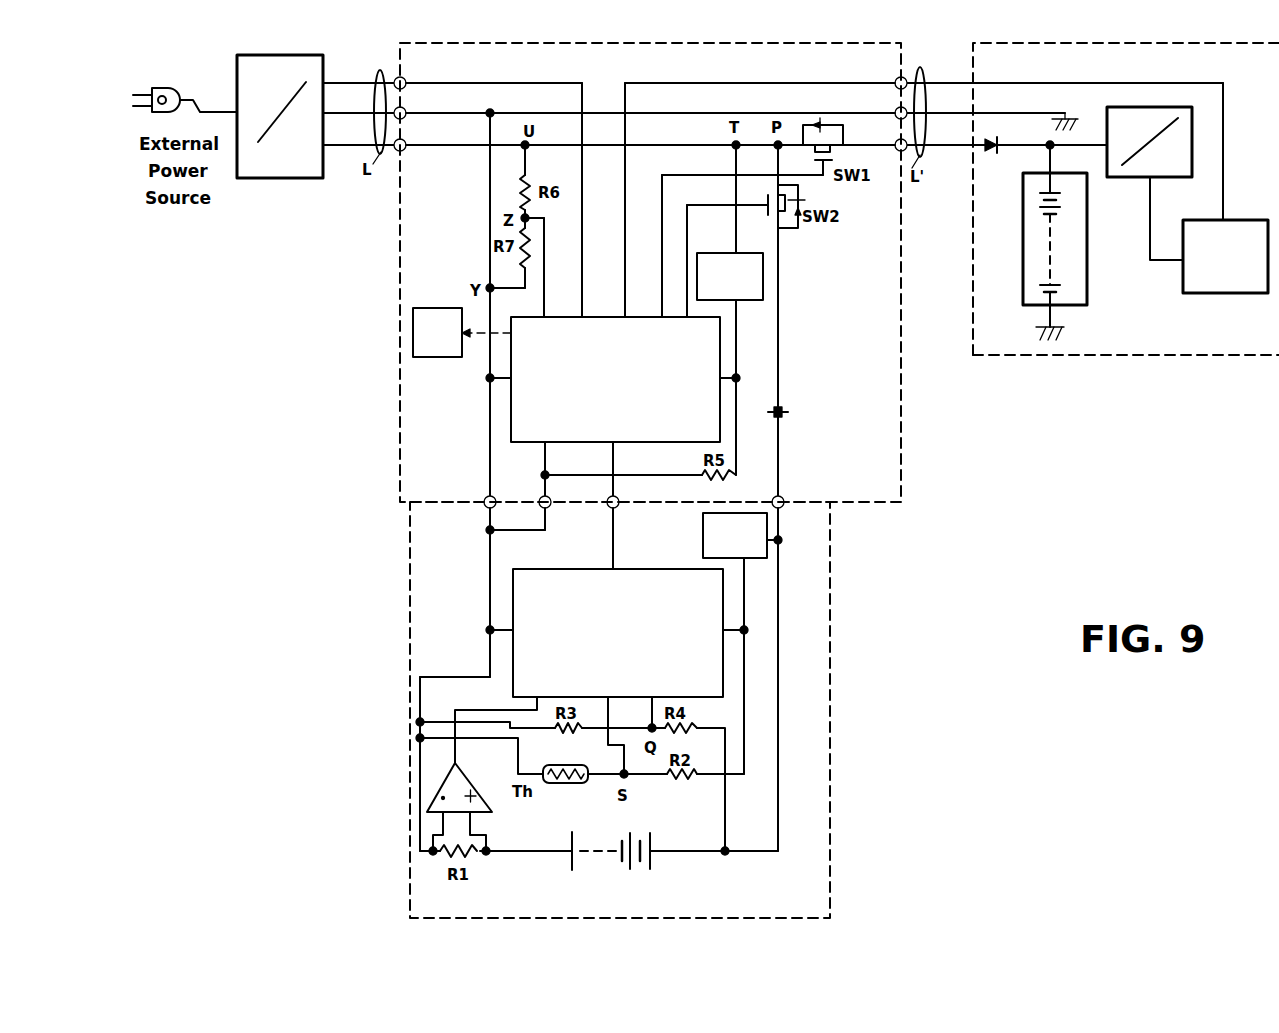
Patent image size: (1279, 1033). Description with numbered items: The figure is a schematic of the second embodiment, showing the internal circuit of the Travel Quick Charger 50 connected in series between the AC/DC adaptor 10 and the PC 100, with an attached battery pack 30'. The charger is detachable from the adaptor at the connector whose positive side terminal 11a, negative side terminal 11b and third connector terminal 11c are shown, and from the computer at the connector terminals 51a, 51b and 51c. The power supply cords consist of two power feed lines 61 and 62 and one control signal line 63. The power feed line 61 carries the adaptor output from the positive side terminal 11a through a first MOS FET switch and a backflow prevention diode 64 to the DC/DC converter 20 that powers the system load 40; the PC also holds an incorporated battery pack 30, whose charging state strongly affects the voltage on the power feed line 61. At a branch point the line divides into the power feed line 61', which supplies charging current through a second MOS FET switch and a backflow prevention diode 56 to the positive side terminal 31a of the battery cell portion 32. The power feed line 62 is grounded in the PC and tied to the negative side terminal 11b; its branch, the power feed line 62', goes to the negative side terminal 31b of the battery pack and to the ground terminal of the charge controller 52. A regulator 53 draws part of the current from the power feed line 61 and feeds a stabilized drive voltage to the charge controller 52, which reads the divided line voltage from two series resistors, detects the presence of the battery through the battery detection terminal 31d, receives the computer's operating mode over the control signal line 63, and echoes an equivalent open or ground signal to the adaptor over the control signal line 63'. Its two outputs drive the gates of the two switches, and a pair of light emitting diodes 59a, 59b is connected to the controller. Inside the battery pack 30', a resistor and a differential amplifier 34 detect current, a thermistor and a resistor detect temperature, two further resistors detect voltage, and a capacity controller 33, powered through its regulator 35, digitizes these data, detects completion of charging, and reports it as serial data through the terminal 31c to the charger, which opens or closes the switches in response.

The AC/DC adaptor 10 is at (300, 178).
The positive side terminal 11a is at (418, 139).
The negative side terminal 11b is at (418, 107).
The connector terminal 11c is at (417, 77).
The DC/DC converter 20 is at (1132, 178).
The battery pack 30 is at (1074, 242).
The battery pack 30' is at (665, 710).
The positive side terminal 31a is at (796, 492).
The negative side terminal 31b is at (469, 496).
The terminal 31c is at (632, 511).
The battery detection terminal 31d is at (562, 515).
The battery cell portion 32 is at (600, 875).
The capacity controller 33 is at (662, 568).
The differential amplifier 34 is at (467, 774).
The regulator 35 is at (756, 559).
The system load 40 is at (1246, 219).
The Travel Quick Charger 50 is at (905, 440).
The connector terminal 51a is at (879, 137).
The connector terminal 51b is at (879, 106).
The connector terminal 51c is at (879, 76).
The charge controller 52 is at (538, 443).
The regulator 53 is at (766, 240).
The diode 56 is at (792, 413).
The LED 59a is at (440, 308).
The LED 59b is at (437, 317).
The power feed line 61 is at (715, 136).
The power feed line 61' is at (799, 320).
The power feed line 62 is at (700, 110).
The power feed line 62' is at (473, 303).
The control signal line 63 is at (1065, 142).
The control signal line 63' is at (358, 76).
The diode 64 is at (994, 156).
The PC 100 is at (1150, 357).